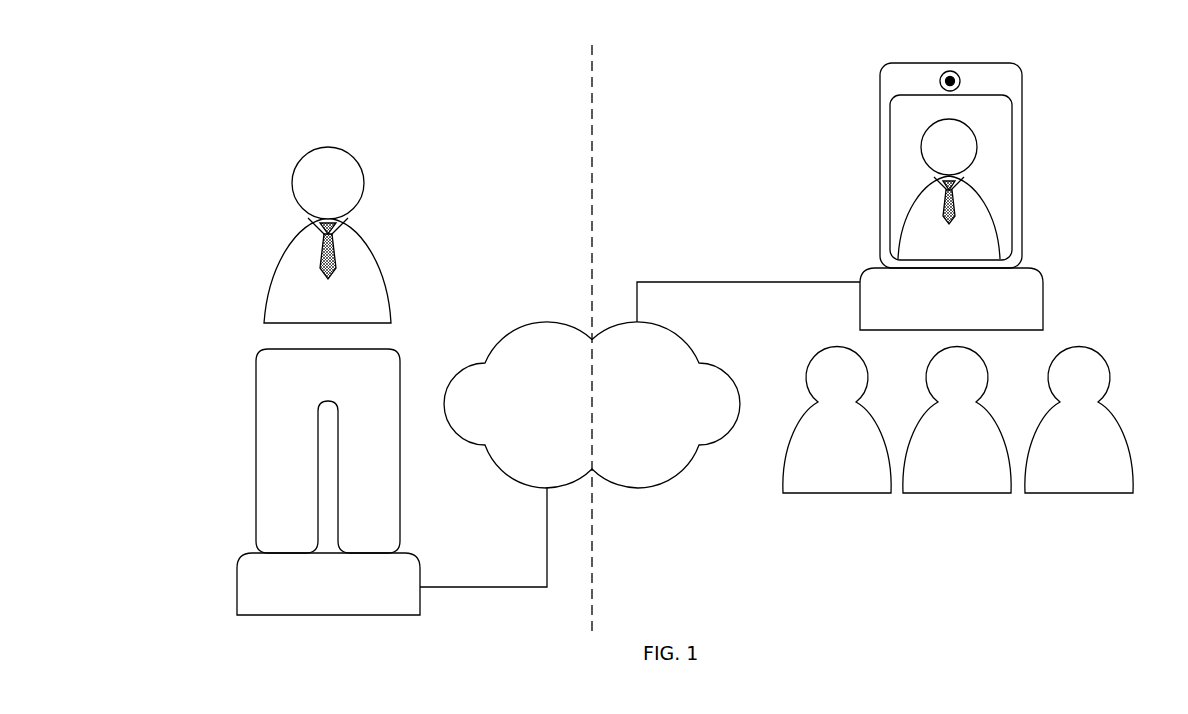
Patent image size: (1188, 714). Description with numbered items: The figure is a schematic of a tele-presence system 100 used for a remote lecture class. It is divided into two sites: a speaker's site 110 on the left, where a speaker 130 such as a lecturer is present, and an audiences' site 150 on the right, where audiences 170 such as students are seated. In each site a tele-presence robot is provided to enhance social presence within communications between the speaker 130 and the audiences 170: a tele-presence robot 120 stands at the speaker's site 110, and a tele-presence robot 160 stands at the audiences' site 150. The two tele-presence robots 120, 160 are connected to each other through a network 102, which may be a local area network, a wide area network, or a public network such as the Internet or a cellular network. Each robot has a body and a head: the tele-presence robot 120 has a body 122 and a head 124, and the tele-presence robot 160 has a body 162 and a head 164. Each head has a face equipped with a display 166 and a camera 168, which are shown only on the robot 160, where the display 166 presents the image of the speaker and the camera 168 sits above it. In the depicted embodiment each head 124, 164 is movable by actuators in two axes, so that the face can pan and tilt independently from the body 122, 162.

The tele-presence system 100 is at (225, 93).
The network 102 is at (667, 482).
The speaker's site 110 is at (478, 59).
The tele-presence robot 120 is at (321, 474).
The body 122 is at (237, 583).
The head 124 is at (256, 470).
The speaker 130 is at (377, 257).
The audiences' site 150 is at (694, 59).
The tele-presence robot 160 is at (946, 185).
The body 162 is at (860, 305).
The head 164 is at (880, 224).
The display 166 is at (1012, 145).
The camera 168 is at (960, 81).
The audiences 170 is at (1142, 502).